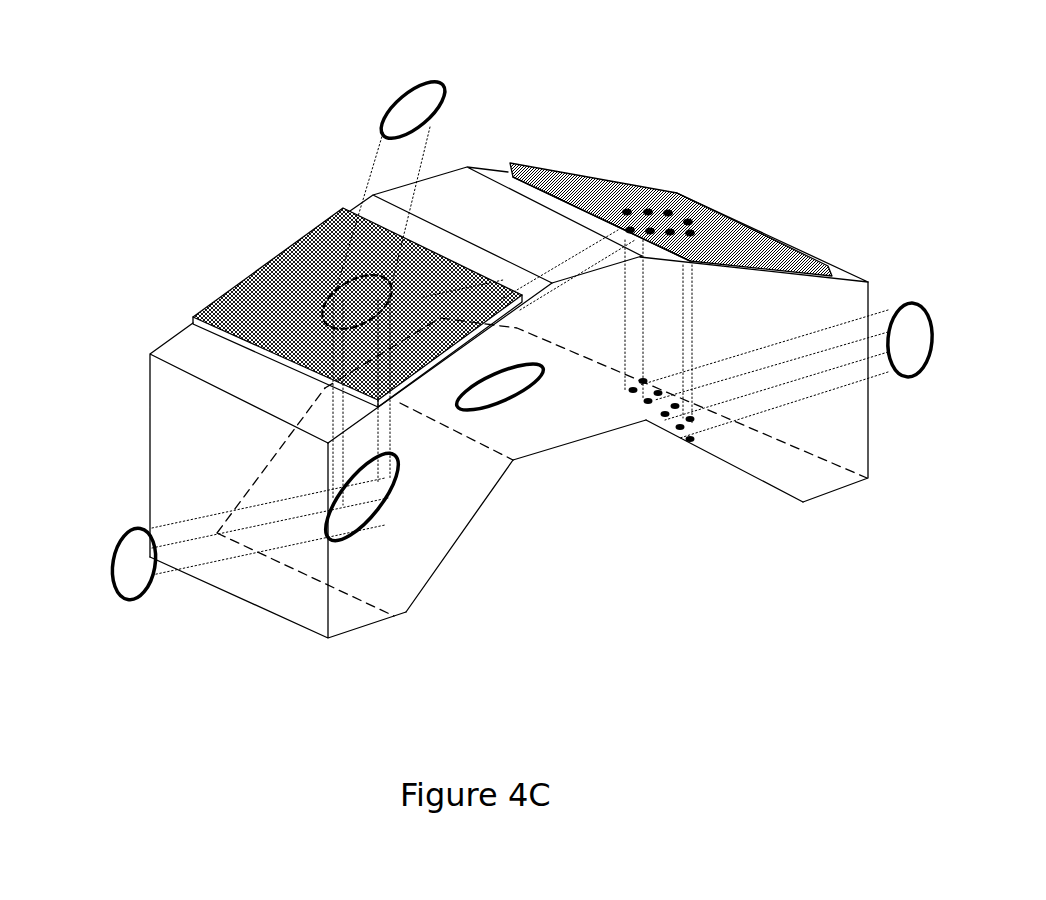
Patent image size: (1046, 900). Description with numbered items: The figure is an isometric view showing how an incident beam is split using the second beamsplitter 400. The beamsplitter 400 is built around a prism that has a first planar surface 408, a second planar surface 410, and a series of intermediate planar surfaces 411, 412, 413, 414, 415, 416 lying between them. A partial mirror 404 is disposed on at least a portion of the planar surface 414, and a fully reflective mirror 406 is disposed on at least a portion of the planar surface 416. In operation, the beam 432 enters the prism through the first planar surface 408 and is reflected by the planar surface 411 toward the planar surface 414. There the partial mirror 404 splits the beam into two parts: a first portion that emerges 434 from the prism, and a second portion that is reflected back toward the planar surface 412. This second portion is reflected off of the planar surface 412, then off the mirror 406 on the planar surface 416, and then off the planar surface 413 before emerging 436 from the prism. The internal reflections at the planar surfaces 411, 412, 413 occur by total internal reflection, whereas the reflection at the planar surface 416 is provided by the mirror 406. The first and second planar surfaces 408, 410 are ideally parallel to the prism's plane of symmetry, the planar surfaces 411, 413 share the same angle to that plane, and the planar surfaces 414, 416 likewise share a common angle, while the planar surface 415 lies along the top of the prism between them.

The second beamsplitter 400 is at (771, 105).
The partial mirror 404 is at (292, 250).
The fully reflective mirror 406 is at (606, 184).
The first planar surface 408 is at (293, 607).
The second planar surface 410 is at (868, 432).
The planar surface 411 is at (450, 530).
The planar surface 412 is at (577, 432).
The planar surface 413 is at (747, 465).
The planar surface 414 is at (170, 350).
The planar surface 415 is at (453, 182).
The planar surface 416 is at (837, 277).
The beam 432 is at (110, 527).
The first portion 434 is at (448, 73).
The second portion 436 is at (910, 294).